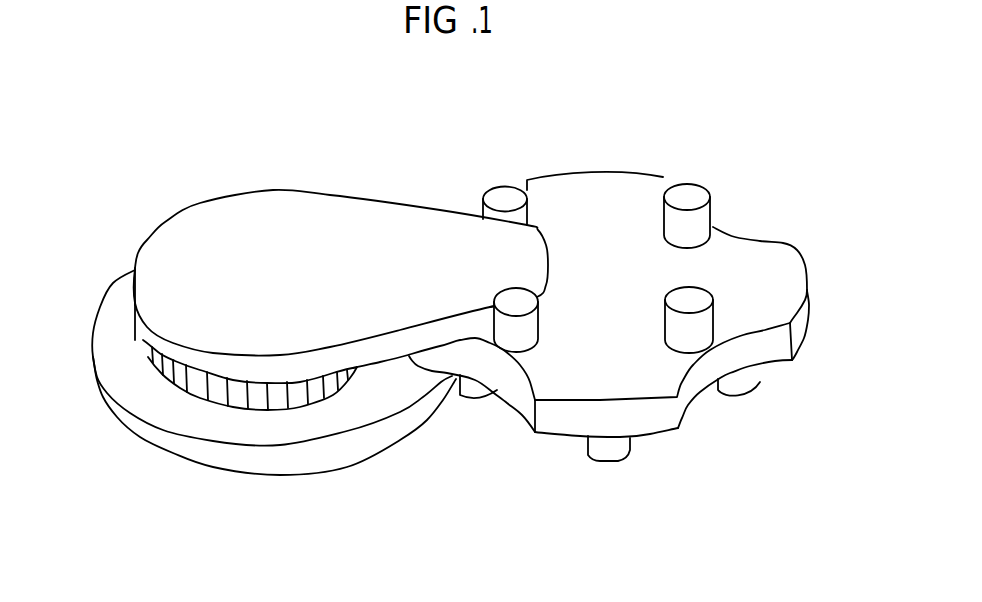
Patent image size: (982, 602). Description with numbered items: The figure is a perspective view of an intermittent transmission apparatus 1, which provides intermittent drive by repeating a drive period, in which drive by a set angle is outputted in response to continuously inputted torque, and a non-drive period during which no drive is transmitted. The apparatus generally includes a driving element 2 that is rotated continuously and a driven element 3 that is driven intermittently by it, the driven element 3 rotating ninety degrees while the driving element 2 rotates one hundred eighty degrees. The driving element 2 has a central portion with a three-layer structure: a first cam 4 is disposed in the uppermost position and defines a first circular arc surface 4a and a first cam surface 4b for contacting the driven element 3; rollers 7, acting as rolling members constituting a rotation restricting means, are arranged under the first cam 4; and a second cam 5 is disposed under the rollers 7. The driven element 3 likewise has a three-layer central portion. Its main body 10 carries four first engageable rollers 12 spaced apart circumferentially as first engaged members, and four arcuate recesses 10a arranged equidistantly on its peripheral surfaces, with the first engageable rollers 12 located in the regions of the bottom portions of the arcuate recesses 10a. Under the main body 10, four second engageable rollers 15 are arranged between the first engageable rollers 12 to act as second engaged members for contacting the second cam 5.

The intermittent transmission apparatus 1 is at (607, 106).
The driving element 2 is at (139, 193).
The driven element 3 is at (751, 188).
The first cam 4 is at (273, 207).
The first circular arc surface 4a is at (137, 301).
The first cam surface 4b is at (474, 318).
The second cam 5 is at (223, 430).
The rollers 7 is at (168, 373).
The main body of the driven element 10 is at (767, 253).
The arcuate recesses 10a is at (687, 380).
The first engageable rollers 12 is at (498, 192).
The second engageable rollers 15 is at (483, 390).